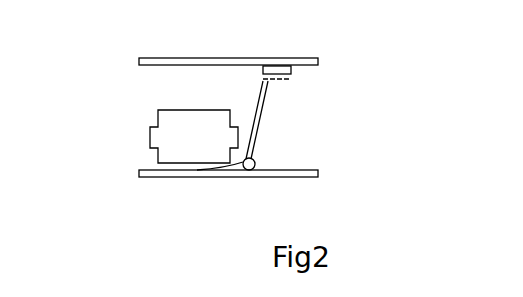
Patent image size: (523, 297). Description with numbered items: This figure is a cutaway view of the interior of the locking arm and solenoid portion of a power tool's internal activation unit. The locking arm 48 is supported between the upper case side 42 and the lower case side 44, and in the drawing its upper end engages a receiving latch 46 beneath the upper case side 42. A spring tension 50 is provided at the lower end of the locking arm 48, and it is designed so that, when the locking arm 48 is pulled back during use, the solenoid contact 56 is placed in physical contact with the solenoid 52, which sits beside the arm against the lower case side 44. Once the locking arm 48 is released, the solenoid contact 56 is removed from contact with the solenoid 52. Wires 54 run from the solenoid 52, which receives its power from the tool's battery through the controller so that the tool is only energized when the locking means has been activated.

The upper case side 42 is at (336, 62).
The lower case side 44 is at (336, 176).
The receiving latch 46 is at (368, 80).
The locking arm 48 is at (277, 116).
The spring tension 50 is at (270, 160).
The solenoid 52 is at (150, 115).
The wires 54 is at (150, 163).
The solenoid contact 56 is at (223, 118).